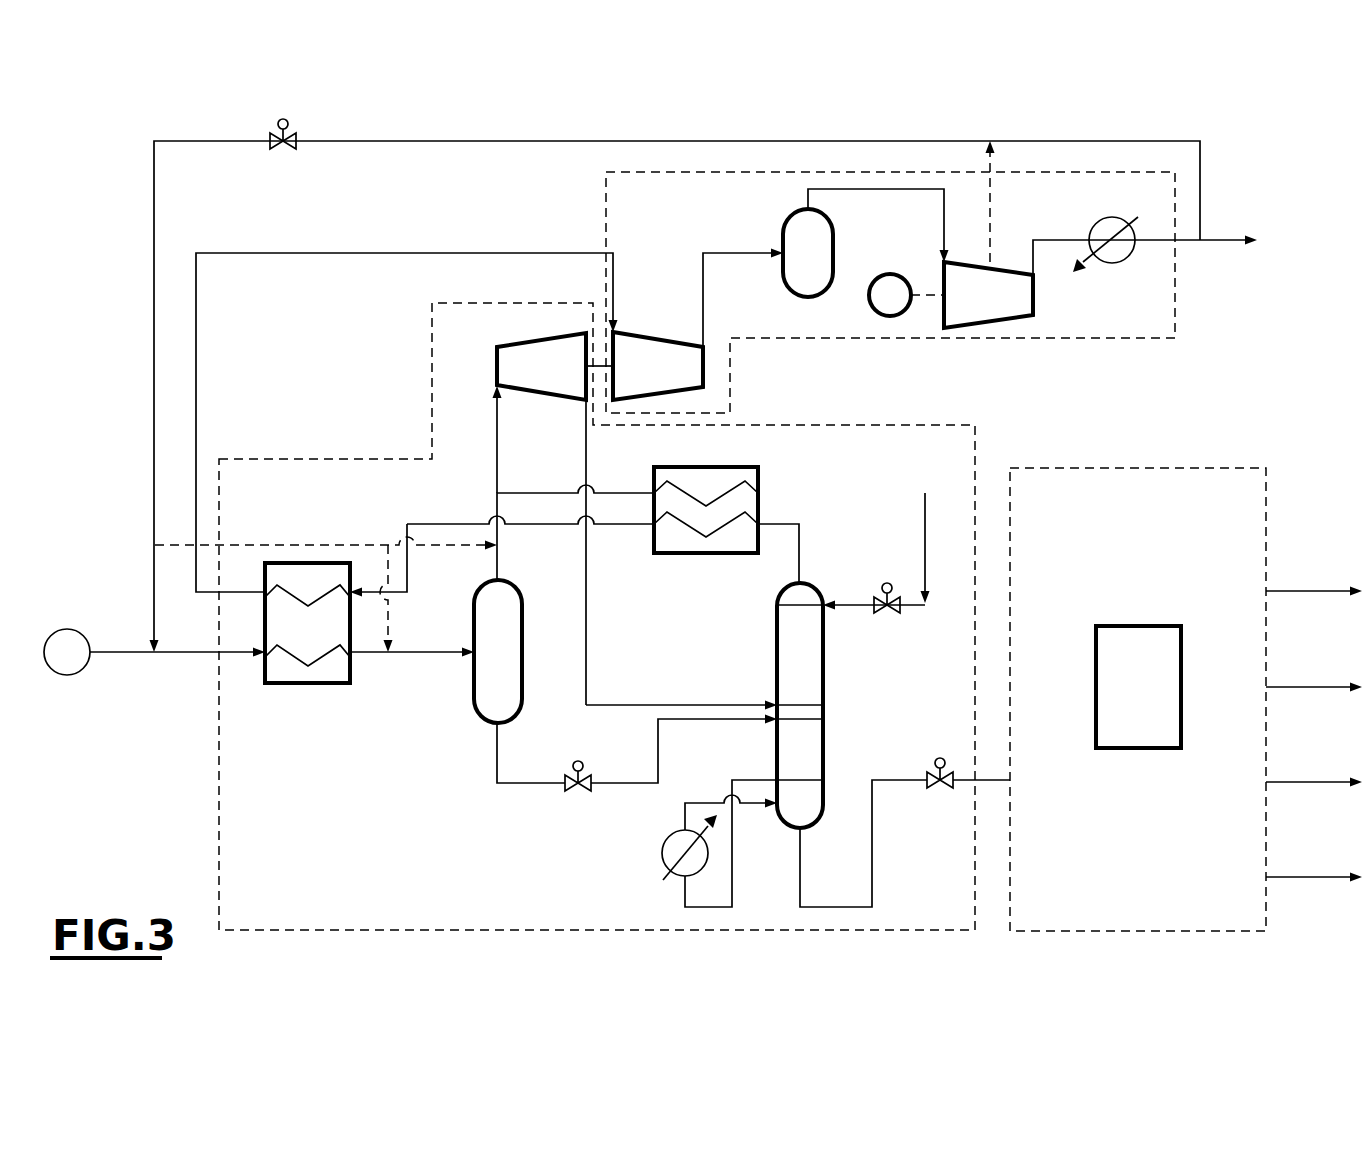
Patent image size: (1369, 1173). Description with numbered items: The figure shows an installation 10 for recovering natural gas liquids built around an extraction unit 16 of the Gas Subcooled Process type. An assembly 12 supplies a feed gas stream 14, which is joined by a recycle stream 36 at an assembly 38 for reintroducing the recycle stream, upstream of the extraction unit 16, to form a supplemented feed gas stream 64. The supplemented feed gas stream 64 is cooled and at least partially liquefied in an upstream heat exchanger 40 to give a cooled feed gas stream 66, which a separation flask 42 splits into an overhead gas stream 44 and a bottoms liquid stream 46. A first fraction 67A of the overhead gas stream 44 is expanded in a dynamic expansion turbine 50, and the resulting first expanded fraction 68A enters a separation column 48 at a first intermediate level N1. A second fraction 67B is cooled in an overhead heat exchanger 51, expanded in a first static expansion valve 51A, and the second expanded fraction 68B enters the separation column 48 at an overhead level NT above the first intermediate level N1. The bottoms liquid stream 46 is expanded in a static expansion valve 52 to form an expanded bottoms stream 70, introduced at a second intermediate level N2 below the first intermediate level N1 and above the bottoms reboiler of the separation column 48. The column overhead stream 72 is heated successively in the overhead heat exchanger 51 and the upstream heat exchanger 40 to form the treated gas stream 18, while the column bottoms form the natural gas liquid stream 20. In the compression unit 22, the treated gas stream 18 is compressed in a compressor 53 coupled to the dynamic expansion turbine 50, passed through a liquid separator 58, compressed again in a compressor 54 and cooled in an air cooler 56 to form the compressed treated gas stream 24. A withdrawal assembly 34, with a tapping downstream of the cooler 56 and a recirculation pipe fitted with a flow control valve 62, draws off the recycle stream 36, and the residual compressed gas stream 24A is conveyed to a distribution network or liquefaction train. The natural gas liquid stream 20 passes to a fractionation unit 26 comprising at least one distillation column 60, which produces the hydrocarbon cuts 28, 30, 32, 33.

The installation 10 is at (125, 122).
The assembly for supplying and conveying a feed gas stream 12 is at (67, 676).
The feed gas stream 14 is at (115, 650).
The extraction unit 16 is at (465, 932).
The treated gas stream 18 is at (196, 422).
The stream of natural gas liquids 20 is at (995, 782).
The compression unit 22 is at (1175, 300).
The compressed treated gas stream 24 is at (1192, 238).
The residual compressed gas stream 24A is at (1220, 240).
The fractionation unit 26 is at (1143, 934).
The hydrocarbon cut 28 is at (1305, 593).
The hydrocarbon cut 30 is at (1305, 689).
The hydrocarbon cut 32 is at (1305, 784).
The hydrocarbon cut 33 is at (1305, 879).
The withdrawal assembly 34 is at (1215, 220).
The recycle stream 36 is at (444, 141).
The assembly for reintroducing the recycle stream 38 is at (153, 667).
The upstream heat exchanger 40 is at (312, 686).
The separation flask 42 is at (470, 722).
The overhead gas stream 44 is at (497, 512).
The bottoms liquid stream 46 is at (505, 770).
The separation column 48 is at (823, 690).
The dynamic expansion turbine 50 is at (548, 345).
The overhead heat exchanger 51 is at (708, 555).
The first static expansion valve 51A is at (895, 612).
The static expansion valve 52 is at (578, 796).
The compressor 53 is at (655, 335).
The compressor 54 is at (1018, 268).
The cooler 56 is at (1110, 218).
The liquid separator 58 is at (788, 265).
The distillation column 60 is at (1140, 750).
The flow control valve 62 is at (283, 152).
The supplemented feed gas stream 64 is at (185, 652).
The cooled feed gas stream 66 is at (400, 654).
The first fraction of the overhead stream 67A is at (500, 448).
The second fraction of the overhead stream 67B is at (632, 492).
The first fraction of the expanded overhead stream 68A is at (586, 668).
The second fraction of expanded overhead stream 68B is at (860, 607).
The expanded bottoms stream 70 is at (657, 772).
The column overhead stream 72 is at (800, 558).
The overhead level NT is at (830, 585).
The first intermediate level N1 is at (800, 710).
The second intermediate level N2 is at (798, 723).